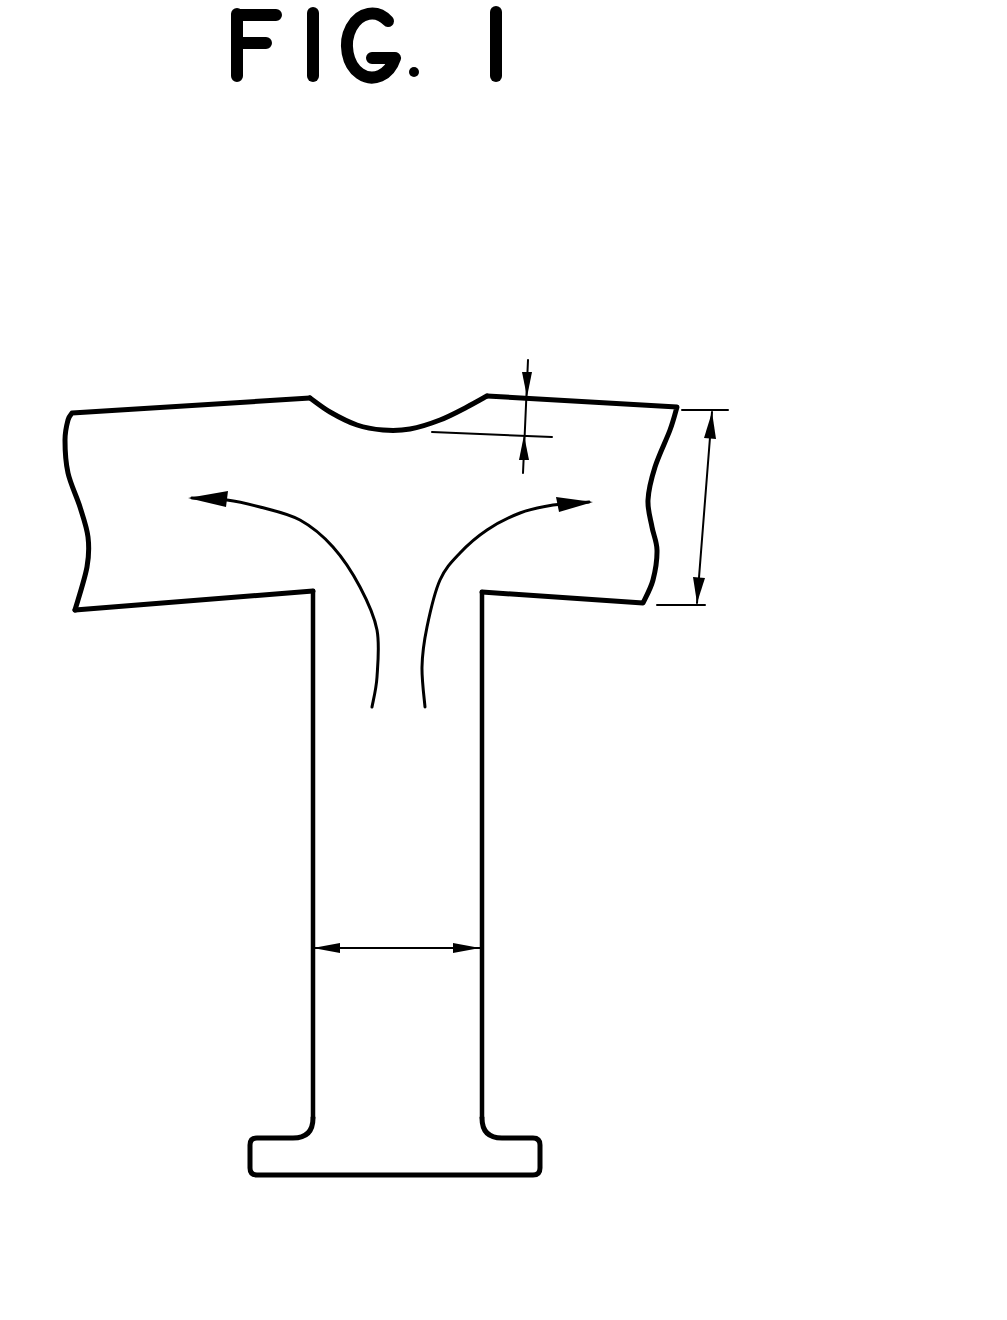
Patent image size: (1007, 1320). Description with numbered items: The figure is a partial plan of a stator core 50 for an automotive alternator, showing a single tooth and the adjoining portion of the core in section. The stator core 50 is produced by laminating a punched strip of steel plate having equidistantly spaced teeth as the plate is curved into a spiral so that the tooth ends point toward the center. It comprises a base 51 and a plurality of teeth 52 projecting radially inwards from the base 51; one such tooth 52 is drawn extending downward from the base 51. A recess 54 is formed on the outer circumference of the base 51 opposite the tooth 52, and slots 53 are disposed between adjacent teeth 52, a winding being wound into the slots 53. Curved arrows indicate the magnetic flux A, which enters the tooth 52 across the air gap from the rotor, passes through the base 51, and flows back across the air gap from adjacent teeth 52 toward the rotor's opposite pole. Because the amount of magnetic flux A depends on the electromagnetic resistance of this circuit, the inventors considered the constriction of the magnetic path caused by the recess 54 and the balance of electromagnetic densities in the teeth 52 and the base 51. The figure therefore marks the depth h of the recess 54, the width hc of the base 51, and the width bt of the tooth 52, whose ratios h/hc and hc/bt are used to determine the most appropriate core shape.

The stator core 50 is at (670, 350).
The base 51 is at (165, 567).
The teeth 52 is at (450, 835).
The slots 53 is at (633, 690).
The recesses 54 is at (380, 427).
The magnetic flux A is at (377, 677).
The depth of the recesses h is at (499, 412).
The width of the base hc is at (707, 507).
The width of the teeth bt is at (396, 929).